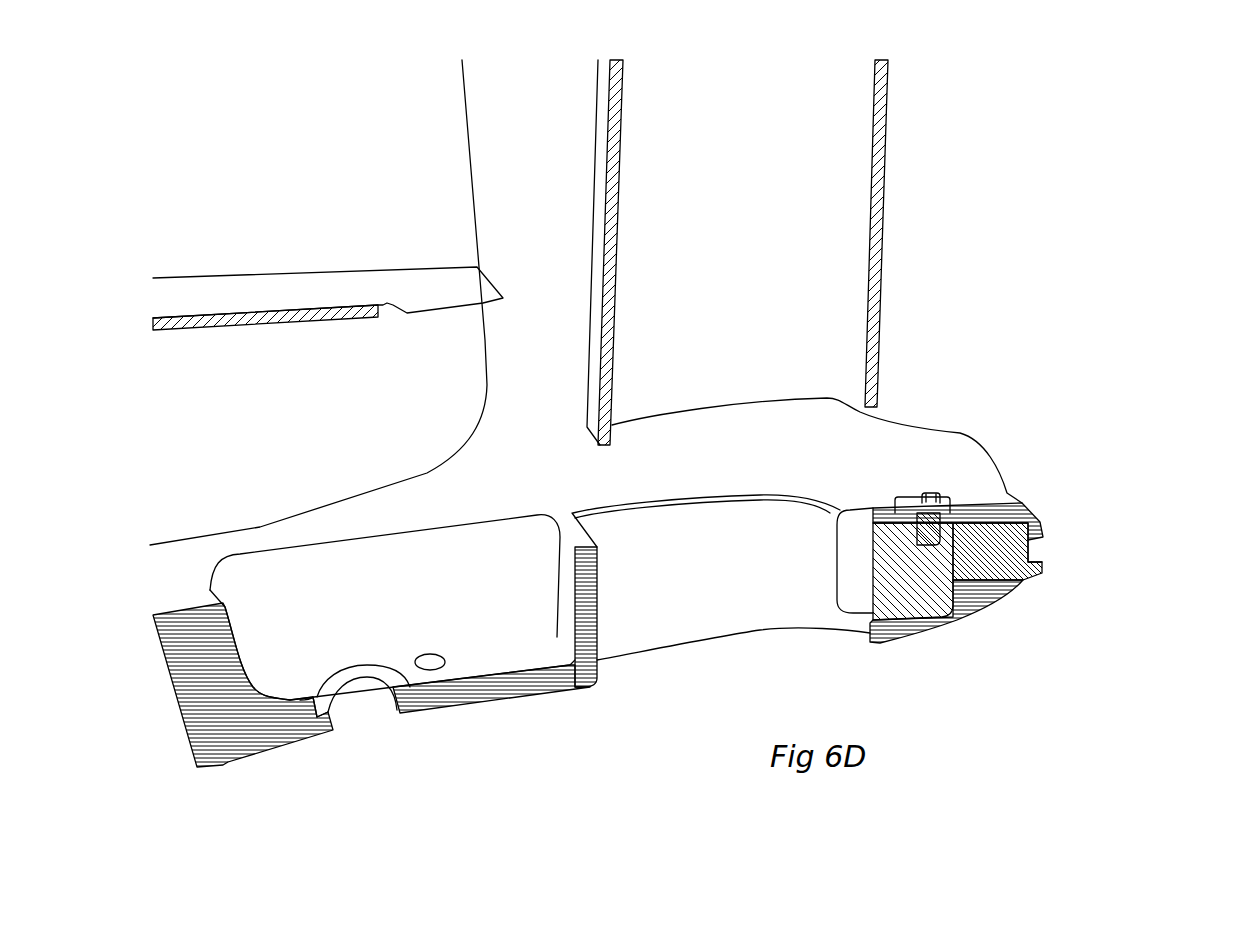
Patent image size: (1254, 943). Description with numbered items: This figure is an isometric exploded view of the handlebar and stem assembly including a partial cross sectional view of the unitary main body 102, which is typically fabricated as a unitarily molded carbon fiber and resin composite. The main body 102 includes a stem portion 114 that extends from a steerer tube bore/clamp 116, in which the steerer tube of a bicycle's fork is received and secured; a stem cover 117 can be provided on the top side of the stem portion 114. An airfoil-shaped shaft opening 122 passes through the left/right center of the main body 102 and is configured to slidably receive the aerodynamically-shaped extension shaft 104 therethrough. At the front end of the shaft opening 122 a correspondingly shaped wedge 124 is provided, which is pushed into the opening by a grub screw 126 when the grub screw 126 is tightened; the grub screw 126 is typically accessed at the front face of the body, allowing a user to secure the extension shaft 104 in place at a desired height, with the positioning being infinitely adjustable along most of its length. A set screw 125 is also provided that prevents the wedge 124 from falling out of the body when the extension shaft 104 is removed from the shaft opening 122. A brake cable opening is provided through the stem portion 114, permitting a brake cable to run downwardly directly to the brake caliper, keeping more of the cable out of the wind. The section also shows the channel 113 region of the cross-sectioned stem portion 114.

The unitary main body 102 is at (988, 598).
The aerodynamically-shaped extension shaft 104 is at (795, 267).
The groove channel 113 is at (353, 697).
The stem portion 114 is at (438, 508).
The steerer tube bore/clamp 116 is at (218, 728).
The stem cover 117 is at (240, 282).
The airfoil-shaped shaft opening 122 is at (717, 570).
The wedge 124 is at (853, 558).
The set screw 125 is at (923, 495).
The grub screw 126 is at (1032, 548).